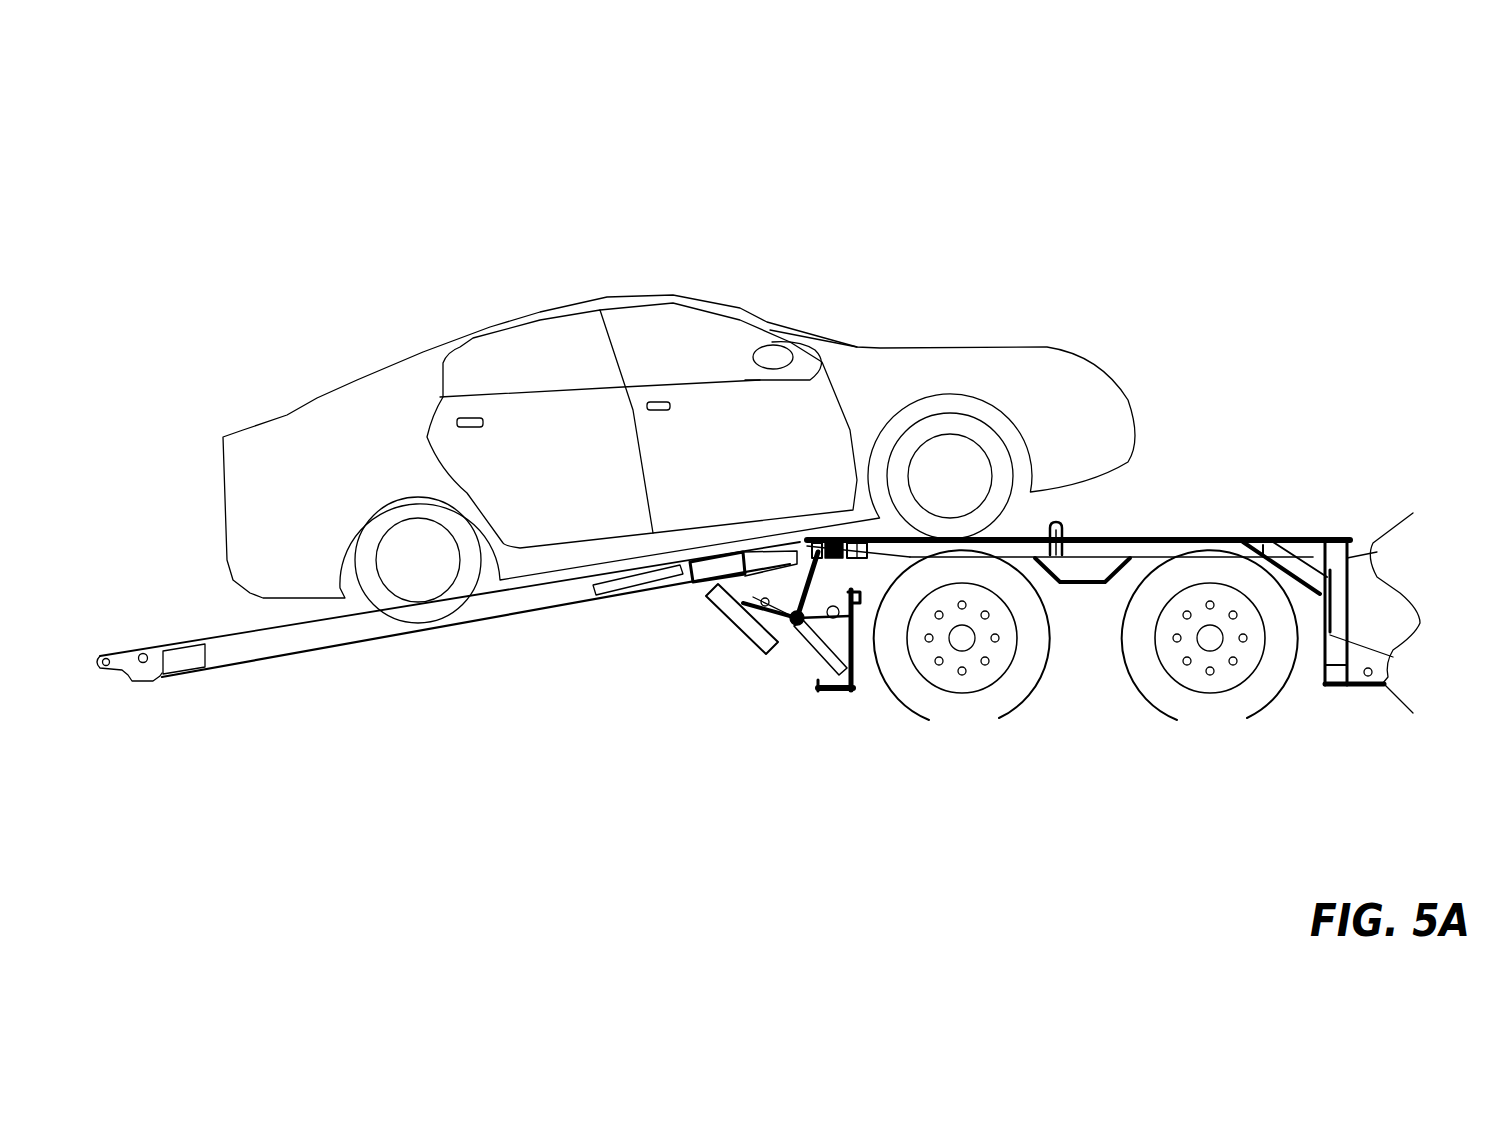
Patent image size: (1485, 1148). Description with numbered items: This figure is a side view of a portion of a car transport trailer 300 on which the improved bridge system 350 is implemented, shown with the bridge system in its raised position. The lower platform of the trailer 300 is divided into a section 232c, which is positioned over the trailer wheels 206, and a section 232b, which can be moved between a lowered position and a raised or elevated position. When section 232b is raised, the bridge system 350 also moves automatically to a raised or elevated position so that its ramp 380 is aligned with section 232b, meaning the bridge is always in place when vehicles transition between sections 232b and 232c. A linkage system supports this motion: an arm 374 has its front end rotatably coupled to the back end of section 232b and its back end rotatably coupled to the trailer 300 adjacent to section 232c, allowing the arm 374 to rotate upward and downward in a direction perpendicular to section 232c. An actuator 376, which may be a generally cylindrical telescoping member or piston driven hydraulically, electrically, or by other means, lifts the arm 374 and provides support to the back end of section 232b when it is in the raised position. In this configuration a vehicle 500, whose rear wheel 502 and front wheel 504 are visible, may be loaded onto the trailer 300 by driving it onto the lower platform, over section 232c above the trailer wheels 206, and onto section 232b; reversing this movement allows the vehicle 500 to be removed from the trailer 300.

The trailer 300 is at (170, 90).
The vehicle 500 is at (381, 400).
The rear wheel of vehicle 502 is at (415, 578).
The front wheel of vehicle 504 is at (962, 472).
The ramp 380 is at (862, 542).
The section 232b is at (280, 720).
The section 232c is at (1271, 480).
The bridge system 350 is at (705, 698).
The arm 374 is at (735, 598).
The actuator 376 is at (807, 647).
The trailer wheels 206 is at (943, 712).